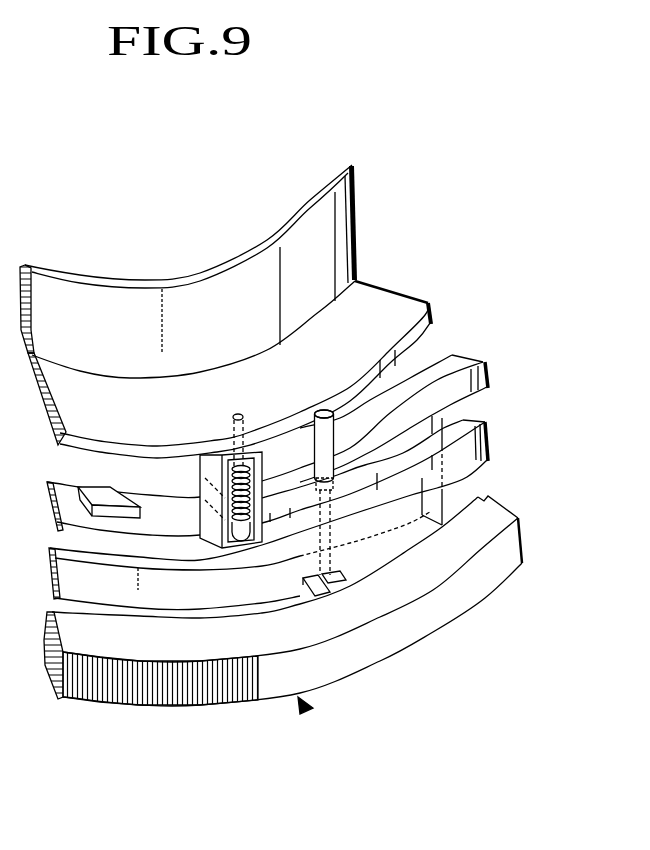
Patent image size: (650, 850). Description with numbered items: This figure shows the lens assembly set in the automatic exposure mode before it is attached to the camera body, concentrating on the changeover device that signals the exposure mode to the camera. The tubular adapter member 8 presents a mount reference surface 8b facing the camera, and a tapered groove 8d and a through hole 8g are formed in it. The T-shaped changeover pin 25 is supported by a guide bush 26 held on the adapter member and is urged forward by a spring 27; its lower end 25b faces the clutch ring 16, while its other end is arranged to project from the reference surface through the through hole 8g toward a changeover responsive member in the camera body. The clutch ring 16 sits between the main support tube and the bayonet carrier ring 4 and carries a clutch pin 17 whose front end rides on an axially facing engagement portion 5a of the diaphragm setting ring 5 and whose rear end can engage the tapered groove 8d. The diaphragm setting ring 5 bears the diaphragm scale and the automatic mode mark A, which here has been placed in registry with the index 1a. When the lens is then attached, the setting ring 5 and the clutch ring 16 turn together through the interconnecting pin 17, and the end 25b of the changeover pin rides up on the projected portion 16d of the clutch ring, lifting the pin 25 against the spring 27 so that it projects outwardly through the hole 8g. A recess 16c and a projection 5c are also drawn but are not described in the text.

The adapter member 8 is at (343, 231).
The mount reference surface 8b is at (387, 302).
The tapered groove 8d is at (313, 417).
The through hole 8g is at (236, 413).
The clutch ring 16 is at (463, 368).
The recessed face of ring 16c is at (453, 428).
The projected portion 16d is at (103, 493).
The bayonet carrier ring 4 is at (488, 447).
The diaphragm setting ring 5 is at (490, 515).
The engagement portion 5a is at (340, 568).
The projection 5c is at (327, 590).
The clutch pin 17 is at (337, 427).
The changeover pin 25 is at (242, 538).
The lower end of changeover pin 25b is at (192, 480).
The guide bush 26 is at (262, 465).
The spring 27 is at (257, 470).
The index 1a is at (311, 711).